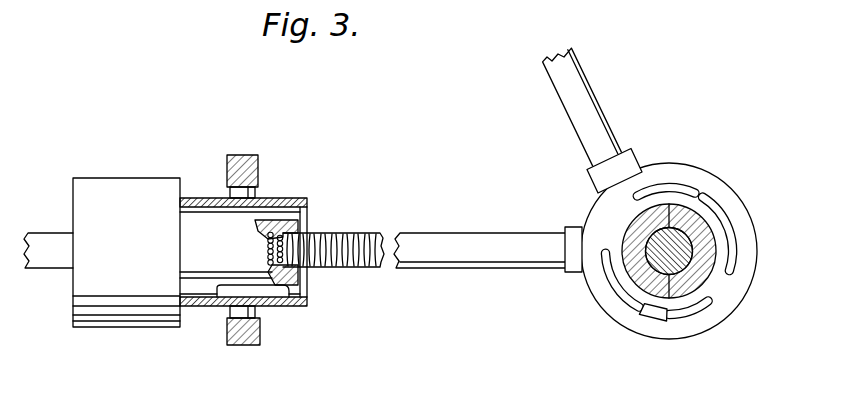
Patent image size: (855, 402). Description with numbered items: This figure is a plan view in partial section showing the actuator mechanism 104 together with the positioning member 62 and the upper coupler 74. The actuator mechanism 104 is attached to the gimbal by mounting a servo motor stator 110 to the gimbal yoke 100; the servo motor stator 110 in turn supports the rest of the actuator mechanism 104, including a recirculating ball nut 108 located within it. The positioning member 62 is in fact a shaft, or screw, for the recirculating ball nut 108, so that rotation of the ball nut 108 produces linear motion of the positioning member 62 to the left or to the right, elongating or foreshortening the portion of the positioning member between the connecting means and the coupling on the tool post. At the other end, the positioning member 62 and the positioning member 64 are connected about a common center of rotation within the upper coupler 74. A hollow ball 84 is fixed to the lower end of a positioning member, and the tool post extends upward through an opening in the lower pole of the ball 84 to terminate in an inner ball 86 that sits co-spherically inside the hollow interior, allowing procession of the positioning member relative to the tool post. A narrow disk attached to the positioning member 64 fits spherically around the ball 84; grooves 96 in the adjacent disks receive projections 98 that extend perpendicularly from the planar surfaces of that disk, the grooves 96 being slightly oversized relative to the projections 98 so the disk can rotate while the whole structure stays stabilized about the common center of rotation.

The positioning member 62 is at (384, 247).
The positioning member 64 is at (587, 108).
The upper coupler 74 is at (691, 346).
The ball 84 is at (640, 282).
The inner ball 86 is at (652, 252).
The grooves 96 is at (666, 180).
The projections 98 is at (718, 195).
The gimbal yoke 100 is at (240, 163).
The actuator mechanism 104 is at (188, 336).
The recirculating ball nut 108 is at (281, 216).
The servo motor stator 110 is at (282, 305).